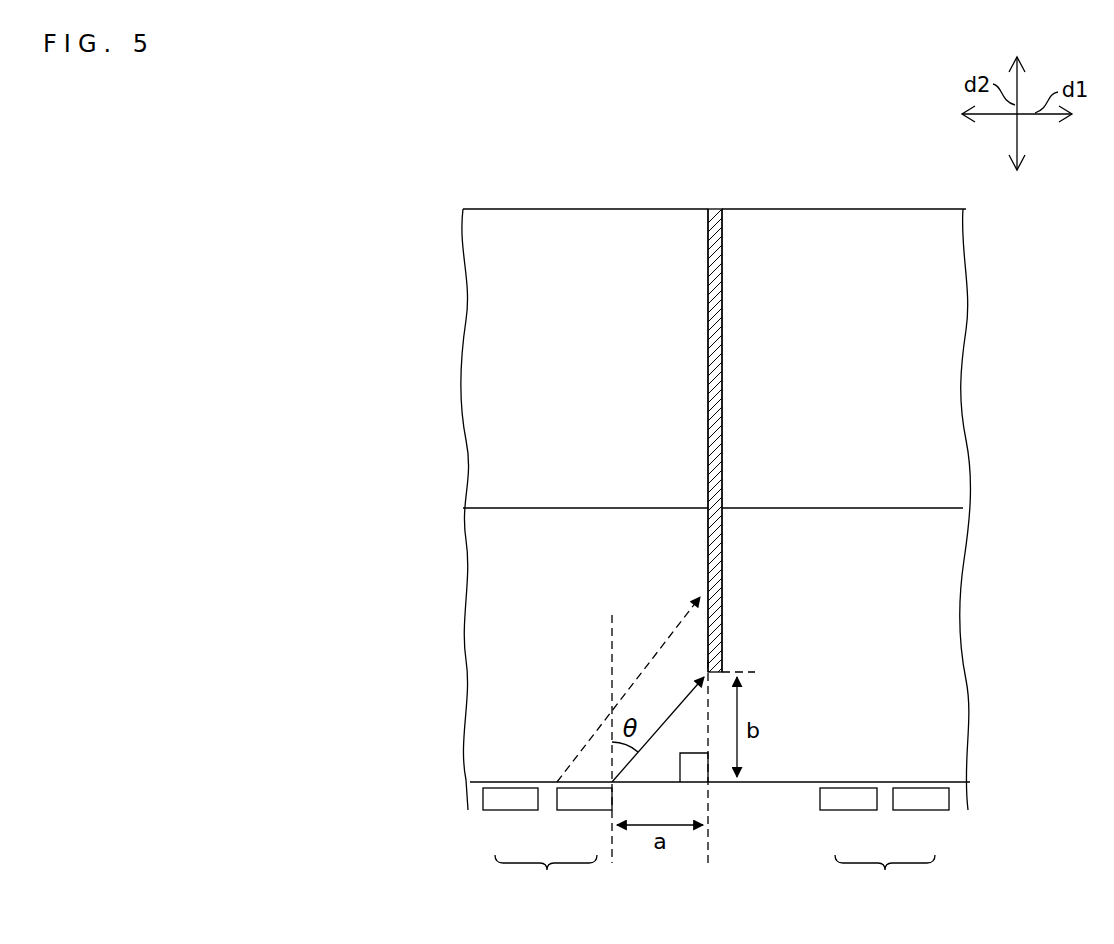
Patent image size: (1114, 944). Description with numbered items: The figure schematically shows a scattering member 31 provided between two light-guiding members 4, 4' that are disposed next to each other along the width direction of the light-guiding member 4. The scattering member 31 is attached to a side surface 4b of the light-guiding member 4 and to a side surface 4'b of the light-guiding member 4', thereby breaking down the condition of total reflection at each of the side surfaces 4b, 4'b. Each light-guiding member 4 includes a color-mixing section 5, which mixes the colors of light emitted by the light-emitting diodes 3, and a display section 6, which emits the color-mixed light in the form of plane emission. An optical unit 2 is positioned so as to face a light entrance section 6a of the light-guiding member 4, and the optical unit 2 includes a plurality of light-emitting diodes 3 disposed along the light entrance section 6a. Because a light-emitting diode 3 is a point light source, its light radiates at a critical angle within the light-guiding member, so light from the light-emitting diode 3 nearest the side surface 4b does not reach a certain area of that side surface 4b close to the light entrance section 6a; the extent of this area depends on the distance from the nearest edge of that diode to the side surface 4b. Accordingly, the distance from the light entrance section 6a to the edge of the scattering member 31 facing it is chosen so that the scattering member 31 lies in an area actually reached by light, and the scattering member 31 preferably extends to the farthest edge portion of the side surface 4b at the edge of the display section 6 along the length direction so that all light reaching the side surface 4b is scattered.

The optical unit 2 is at (715, 881).
The light-emitting diode 3 is at (512, 800).
The light-guiding member 4 is at (513, 469).
The light-guiding member 4' is at (916, 469).
The side surface of the light-guiding member 4b is at (708, 237).
The side surface of the light-guiding member 4'b is at (748, 416).
The color-mixing section 5 is at (468, 603).
The display section 6 is at (468, 353).
The light entrance section 6a is at (665, 782).
The scattering member 31 is at (716, 309).